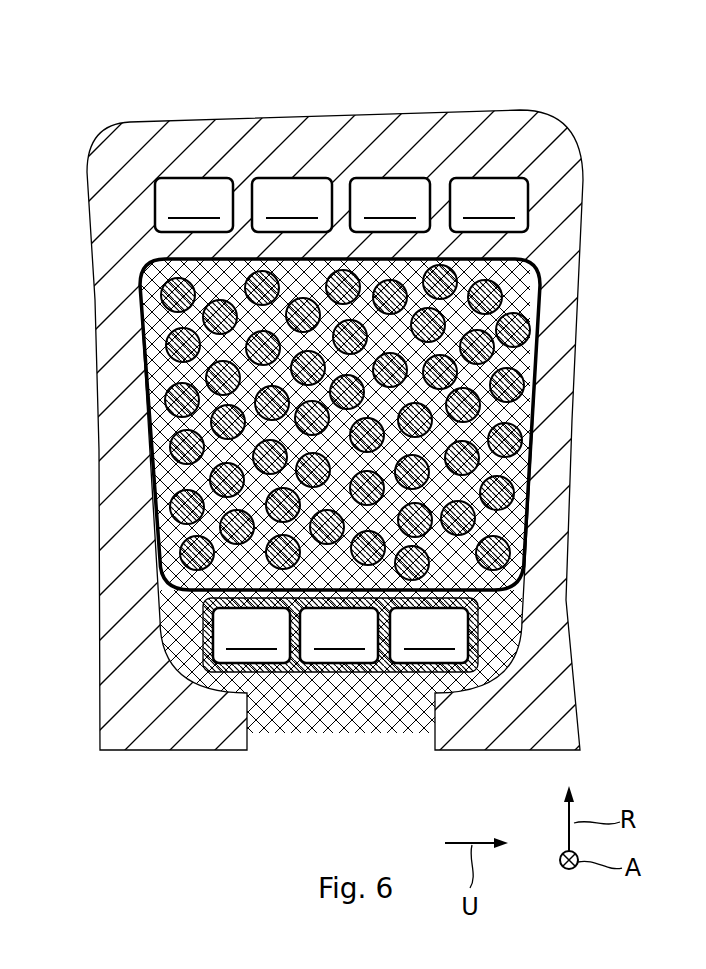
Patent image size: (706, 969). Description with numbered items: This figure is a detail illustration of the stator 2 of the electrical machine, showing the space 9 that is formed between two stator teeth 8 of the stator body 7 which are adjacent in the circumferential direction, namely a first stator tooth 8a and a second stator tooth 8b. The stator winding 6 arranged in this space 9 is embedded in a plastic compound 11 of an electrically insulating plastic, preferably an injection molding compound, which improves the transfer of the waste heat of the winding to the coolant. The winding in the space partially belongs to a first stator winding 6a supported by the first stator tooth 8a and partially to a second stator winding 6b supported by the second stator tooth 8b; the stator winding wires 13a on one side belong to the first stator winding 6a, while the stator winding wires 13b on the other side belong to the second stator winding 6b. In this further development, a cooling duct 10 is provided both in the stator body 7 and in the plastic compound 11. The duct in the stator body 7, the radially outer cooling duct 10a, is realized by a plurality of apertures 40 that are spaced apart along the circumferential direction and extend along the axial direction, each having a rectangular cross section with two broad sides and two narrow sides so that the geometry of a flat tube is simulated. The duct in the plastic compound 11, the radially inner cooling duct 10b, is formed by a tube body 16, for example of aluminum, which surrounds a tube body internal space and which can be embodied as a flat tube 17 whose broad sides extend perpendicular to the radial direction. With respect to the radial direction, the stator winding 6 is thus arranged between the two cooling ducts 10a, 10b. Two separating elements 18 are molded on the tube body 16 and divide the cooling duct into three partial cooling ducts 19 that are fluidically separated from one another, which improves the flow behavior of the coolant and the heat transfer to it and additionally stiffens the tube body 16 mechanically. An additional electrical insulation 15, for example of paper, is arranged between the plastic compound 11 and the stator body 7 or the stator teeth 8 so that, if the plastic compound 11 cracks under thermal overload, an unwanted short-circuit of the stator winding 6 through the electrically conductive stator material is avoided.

The stator 2 is at (628, 130).
The stator body 7 is at (131, 137).
The stator teeth 8 is at (353, 430).
The first stator tooth 8a is at (123, 455).
The second stator tooth 8b is at (558, 527).
The cooling duct 10 is at (359, 160).
The radially outer cooling duct 10a is at (532, 203).
The radially inner cooling duct 10b is at (398, 680).
The apertures 40 is at (281, 160).
The plastic compound 11 is at (545, 278).
The space 9 is at (535, 465).
The stator winding 6 is at (352, 422).
The first stator winding 6a is at (172, 552).
The second stator winding 6b is at (535, 383).
The stator winding wires 13a is at (205, 316).
The stator winding wires 13b is at (528, 352).
The electrical insulation 15 is at (525, 596).
The tube body 16 is at (334, 686).
The flat tube 17 is at (334, 686).
The separating elements 18 is at (292, 666).
The partial cooling ducts 19 is at (347, 701).